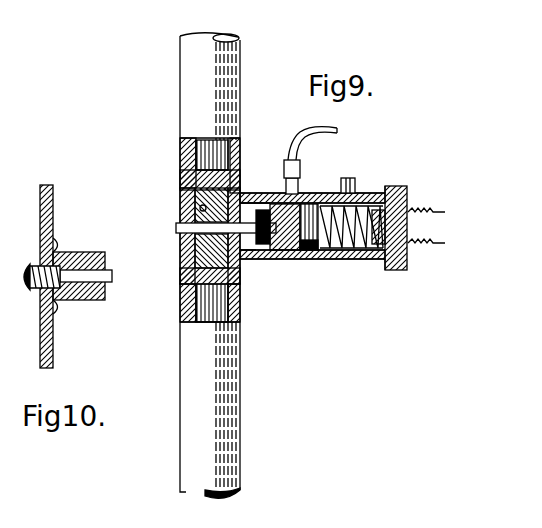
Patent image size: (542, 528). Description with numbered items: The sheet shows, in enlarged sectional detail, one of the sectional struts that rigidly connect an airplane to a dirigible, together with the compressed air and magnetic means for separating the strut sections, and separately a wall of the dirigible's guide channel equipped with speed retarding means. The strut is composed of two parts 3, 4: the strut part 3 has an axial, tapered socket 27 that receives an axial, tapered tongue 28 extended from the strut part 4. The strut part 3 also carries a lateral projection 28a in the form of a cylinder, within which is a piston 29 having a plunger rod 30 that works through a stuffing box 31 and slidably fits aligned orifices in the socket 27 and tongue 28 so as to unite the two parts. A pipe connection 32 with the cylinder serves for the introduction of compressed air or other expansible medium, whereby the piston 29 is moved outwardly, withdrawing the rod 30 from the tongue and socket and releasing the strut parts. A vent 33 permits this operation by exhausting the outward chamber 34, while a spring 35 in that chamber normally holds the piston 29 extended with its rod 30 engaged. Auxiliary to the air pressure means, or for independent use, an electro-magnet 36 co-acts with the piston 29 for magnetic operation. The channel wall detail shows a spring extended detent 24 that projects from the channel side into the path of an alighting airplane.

In FIG. 9, the strut part 3 is at (240, 78).
In FIG. 9, the strut part 4 is at (240, 378).
In FIG. 10, the spring extended detent 24 is at (30, 288).
In FIG. 9, the axial tapered socket 27 is at (180, 204).
In FIG. 9, the axial tapered tongue 28 is at (180, 253).
In FIG. 9, the lateral projection 28a is at (292, 259).
In FIG. 9, the piston 29 is at (305, 204).
In FIG. 9, the plunger rod 30 is at (176, 228).
In FIG. 9, the stuffing box 31 is at (276, 259).
In FIG. 9, the pipe connection 32 is at (284, 166).
In FIG. 9, the vent 33 is at (355, 186).
In FIG. 9, the outward chamber 34 is at (352, 259).
In FIG. 9, the spring 35 is at (394, 270).
In FIG. 9, the electro-magnet 36 is at (408, 210).